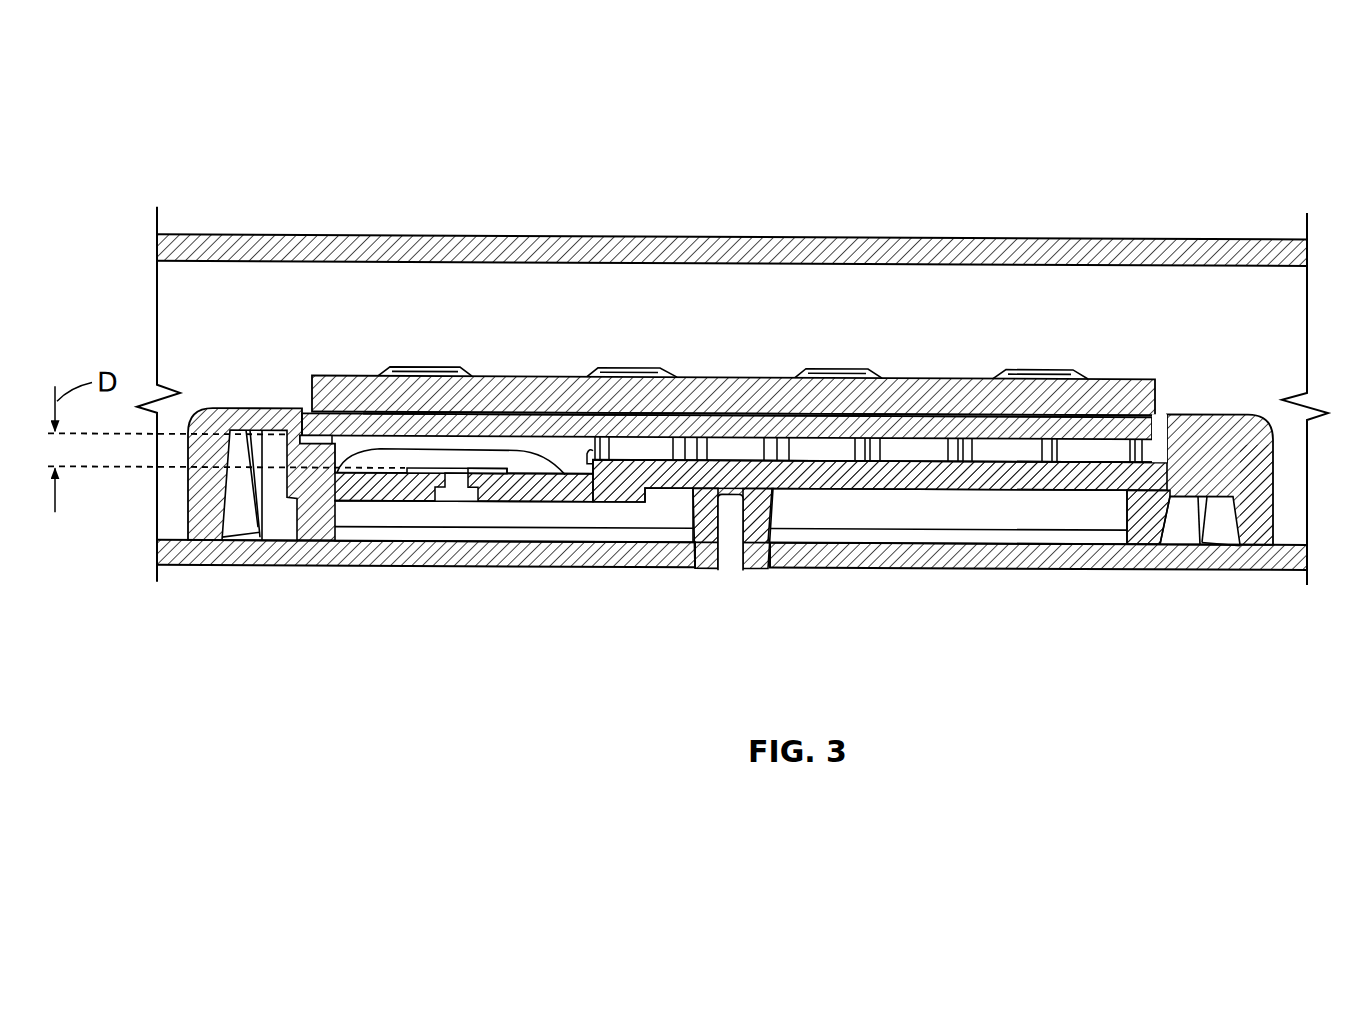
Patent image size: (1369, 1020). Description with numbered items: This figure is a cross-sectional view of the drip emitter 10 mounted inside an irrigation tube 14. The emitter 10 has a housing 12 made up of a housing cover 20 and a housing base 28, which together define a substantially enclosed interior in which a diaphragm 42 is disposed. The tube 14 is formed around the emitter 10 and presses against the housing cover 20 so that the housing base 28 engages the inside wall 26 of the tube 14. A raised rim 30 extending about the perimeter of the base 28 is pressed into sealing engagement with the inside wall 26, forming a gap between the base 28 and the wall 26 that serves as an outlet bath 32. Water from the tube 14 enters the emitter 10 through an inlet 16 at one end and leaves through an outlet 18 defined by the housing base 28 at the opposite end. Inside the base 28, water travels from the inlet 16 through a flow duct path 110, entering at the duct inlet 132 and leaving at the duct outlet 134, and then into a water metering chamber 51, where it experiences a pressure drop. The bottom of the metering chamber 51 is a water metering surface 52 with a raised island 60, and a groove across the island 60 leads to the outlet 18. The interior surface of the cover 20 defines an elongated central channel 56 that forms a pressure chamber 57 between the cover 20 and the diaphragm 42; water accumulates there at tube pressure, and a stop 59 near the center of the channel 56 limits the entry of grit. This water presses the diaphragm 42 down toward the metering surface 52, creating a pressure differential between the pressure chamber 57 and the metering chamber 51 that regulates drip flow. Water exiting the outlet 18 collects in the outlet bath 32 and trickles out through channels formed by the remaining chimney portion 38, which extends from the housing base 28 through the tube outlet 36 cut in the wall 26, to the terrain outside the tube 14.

The emitter 10 is at (325, 335).
The housing 12 is at (1247, 457).
The irrigation tube 14 is at (229, 114).
The inlet 16 is at (1170, 401).
The outlet 18 is at (448, 493).
The housing cover 20 is at (705, 388).
The inside wall 26 is at (174, 529).
The housing base 28 is at (985, 480).
The raised rim 30 is at (1253, 537).
The outlet bath 32 is at (453, 535).
The tube outlet 36 is at (733, 558).
The remaining chimney portion 38 is at (760, 570).
The diaphragm 42 is at (477, 430).
The water metering chamber 51 is at (567, 462).
The water metering surface 52 is at (410, 472).
The channel 56 is at (930, 418).
The pressure chamber 57 is at (605, 437).
The stop 59 is at (730, 417).
The island 60 is at (490, 472).
The flow duct path 110 is at (912, 452).
The inlet of flow duct 132 is at (1150, 452).
The outlet of flow duct 134 is at (587, 452).